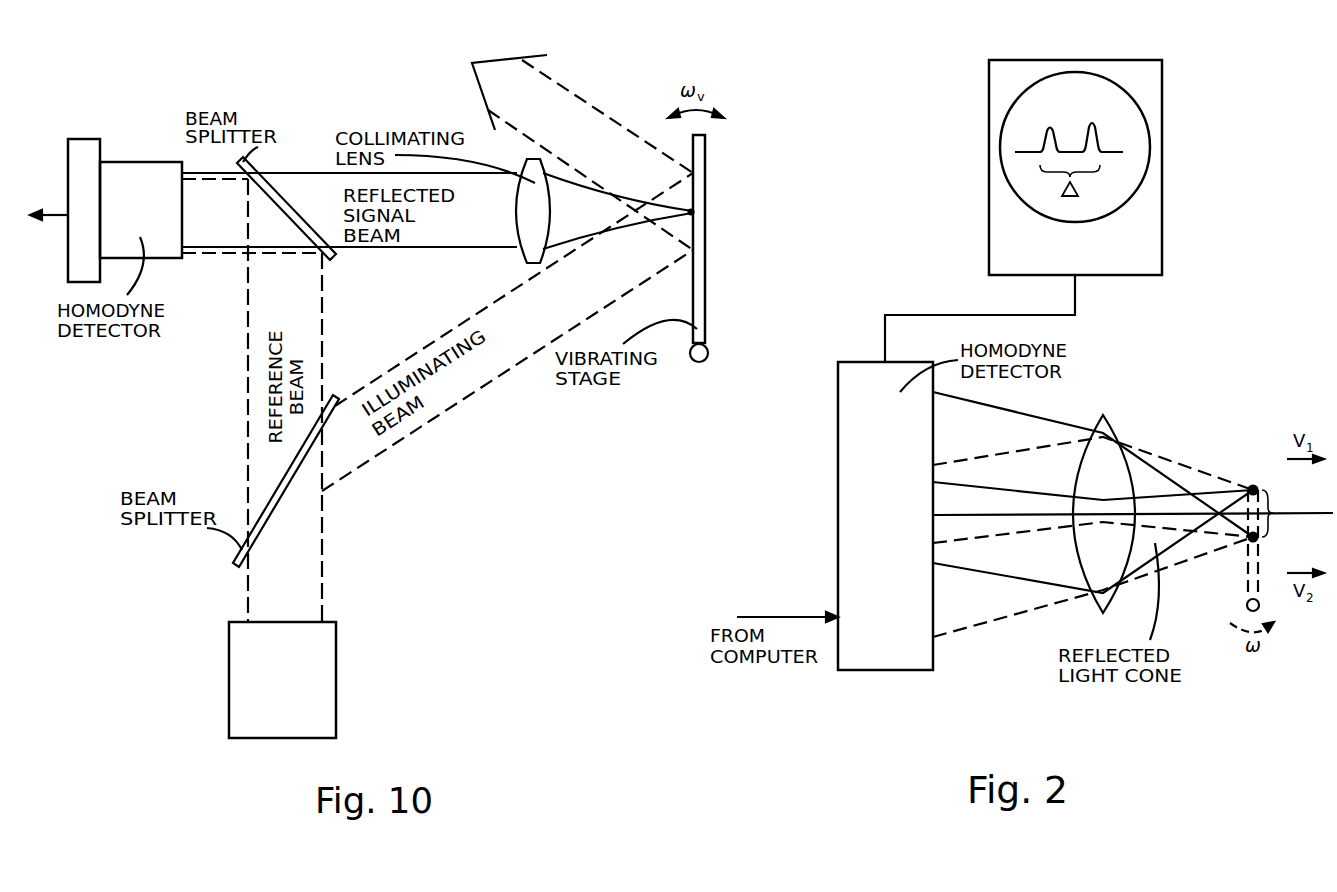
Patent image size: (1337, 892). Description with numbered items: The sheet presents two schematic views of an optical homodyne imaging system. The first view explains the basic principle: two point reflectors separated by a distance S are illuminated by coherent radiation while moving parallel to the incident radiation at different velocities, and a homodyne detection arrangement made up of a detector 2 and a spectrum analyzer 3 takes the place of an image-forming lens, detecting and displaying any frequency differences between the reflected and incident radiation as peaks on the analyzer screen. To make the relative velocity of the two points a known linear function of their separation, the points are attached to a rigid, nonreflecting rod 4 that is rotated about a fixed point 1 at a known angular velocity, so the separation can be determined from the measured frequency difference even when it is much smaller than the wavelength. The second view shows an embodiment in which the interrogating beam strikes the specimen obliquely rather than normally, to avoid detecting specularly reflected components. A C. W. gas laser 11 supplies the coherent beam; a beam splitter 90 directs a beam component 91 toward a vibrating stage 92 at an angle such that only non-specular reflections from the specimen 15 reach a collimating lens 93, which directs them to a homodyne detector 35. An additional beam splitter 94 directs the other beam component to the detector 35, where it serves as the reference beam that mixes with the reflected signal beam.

In FIG. 10, the homodyne detector 35 is at (150, 222).
In FIG. 10, the beam splitter 94 is at (335, 260).
In FIG. 10, the collimating lens 93 is at (547, 222).
In FIG. 10, the specimen 15 is at (694, 212).
In FIG. 10, the vibrating stage 92 is at (702, 315).
In FIG. 10, the beam component 91 is at (545, 328).
In FIG. 10, the beam splitter 90 is at (233, 568).
In FIG. 10, the C. W. gas laser 11 is at (252, 647).
In FIG. 2, the analyzer 3 is at (1142, 210).
In FIG. 2, the detector 2 is at (892, 532).
In FIG. 2, the fixed point 1 is at (1247, 605).
In FIG. 2, the rigid, nonreflecting rod 4 is at (1259, 522).